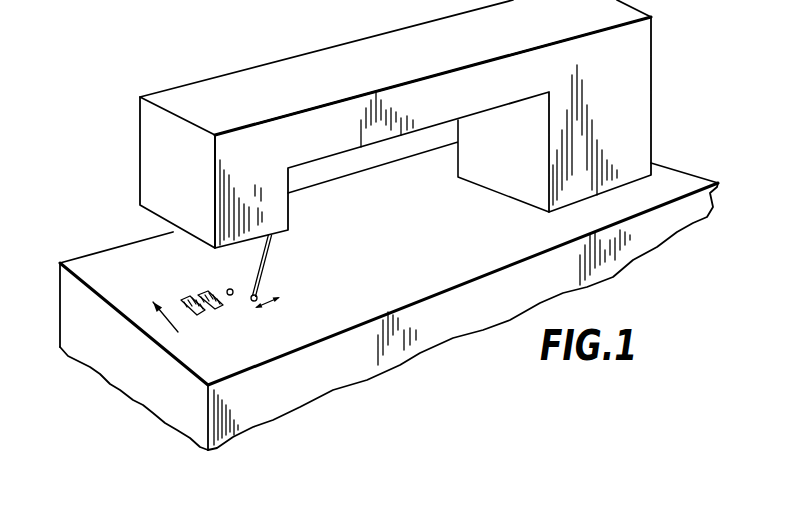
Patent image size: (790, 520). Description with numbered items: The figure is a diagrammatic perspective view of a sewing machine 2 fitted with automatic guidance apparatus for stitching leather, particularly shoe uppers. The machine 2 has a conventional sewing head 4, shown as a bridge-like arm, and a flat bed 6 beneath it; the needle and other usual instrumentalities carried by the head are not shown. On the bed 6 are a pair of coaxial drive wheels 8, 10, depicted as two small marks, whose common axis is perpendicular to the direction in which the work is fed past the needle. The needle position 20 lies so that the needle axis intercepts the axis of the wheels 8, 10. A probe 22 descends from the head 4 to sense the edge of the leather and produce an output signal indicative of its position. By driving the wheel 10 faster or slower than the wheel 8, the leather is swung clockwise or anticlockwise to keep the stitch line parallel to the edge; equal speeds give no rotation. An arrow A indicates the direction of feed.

The sewing machine 2 is at (235, 53).
The sewing head 4 is at (165, 177).
The flat bed 6 is at (133, 263).
The drive wheel 8 is at (221, 308).
The drive wheel 10 is at (203, 314).
The needle position 20 is at (230, 289).
The probe 22 is at (271, 251).
The direction of movement A is at (162, 318).